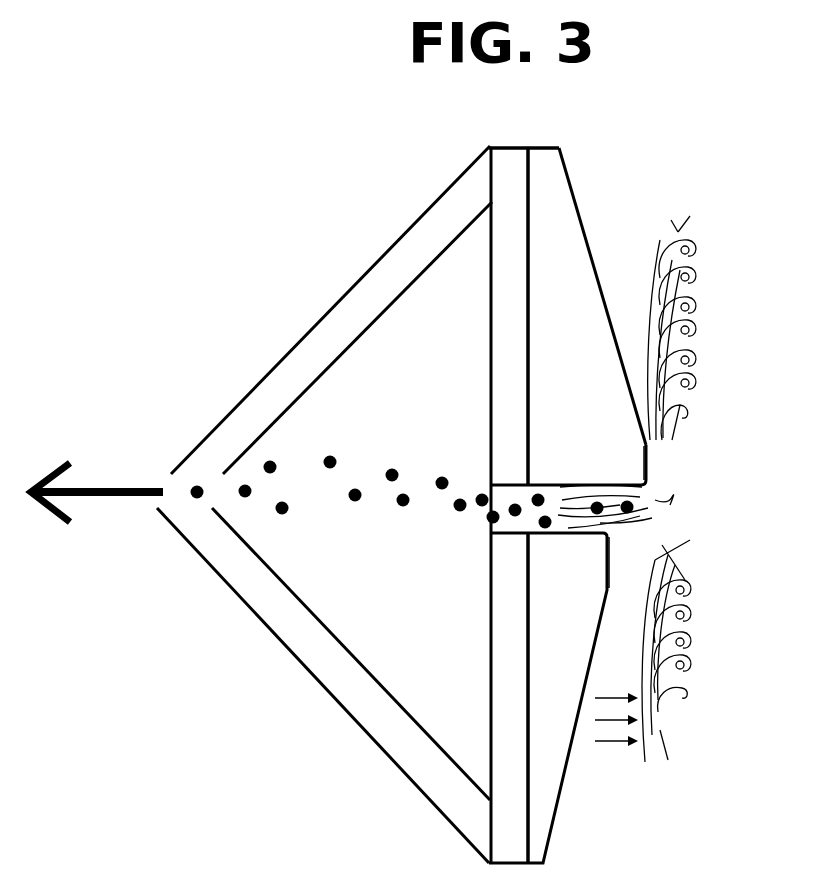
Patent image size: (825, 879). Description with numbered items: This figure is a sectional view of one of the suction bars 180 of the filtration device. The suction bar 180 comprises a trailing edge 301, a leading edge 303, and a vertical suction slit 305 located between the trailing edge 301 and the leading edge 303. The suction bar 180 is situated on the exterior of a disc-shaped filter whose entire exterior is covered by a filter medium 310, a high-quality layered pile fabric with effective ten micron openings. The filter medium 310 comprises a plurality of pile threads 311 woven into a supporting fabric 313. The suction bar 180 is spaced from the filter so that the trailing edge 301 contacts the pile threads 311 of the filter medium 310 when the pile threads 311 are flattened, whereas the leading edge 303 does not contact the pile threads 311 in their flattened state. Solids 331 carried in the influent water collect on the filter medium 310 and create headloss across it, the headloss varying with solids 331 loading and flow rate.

The suction bar 180 is at (570, 150).
The trailing edge 301 is at (647, 445).
The leading edge 303 is at (614, 572).
The vertical suction slit 305 is at (609, 525).
The filter medium 310 is at (710, 257).
The pile threads 311 is at (651, 488).
The supporting fabric 313 is at (690, 700).
The solids 331 is at (260, 487).